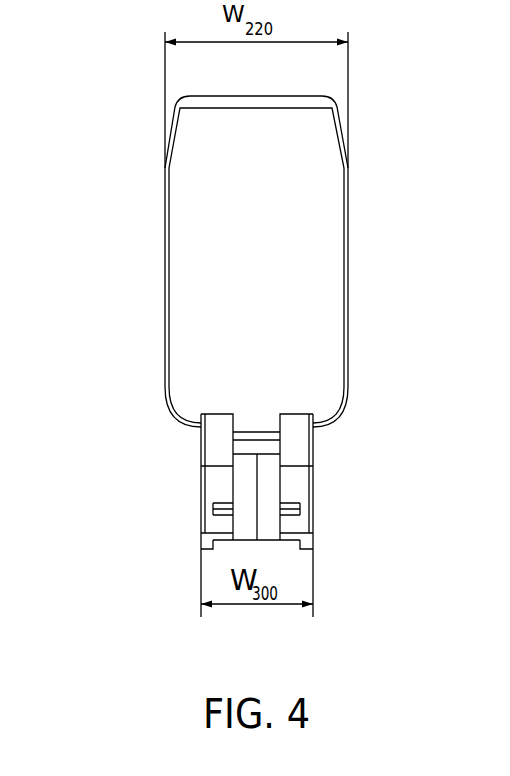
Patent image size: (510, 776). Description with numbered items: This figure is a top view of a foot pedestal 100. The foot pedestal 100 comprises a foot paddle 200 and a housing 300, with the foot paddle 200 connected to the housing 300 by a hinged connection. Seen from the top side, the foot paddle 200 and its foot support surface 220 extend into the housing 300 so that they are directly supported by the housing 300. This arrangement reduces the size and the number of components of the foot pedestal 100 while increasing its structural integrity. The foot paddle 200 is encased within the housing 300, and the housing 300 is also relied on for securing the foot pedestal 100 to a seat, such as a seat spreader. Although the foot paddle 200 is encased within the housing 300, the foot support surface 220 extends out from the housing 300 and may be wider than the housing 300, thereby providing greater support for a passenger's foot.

The foot pedestal 100 is at (131, 146).
The foot paddle 200 is at (328, 142).
The foot support surface 220 is at (287, 260).
The housing 300 is at (293, 489).